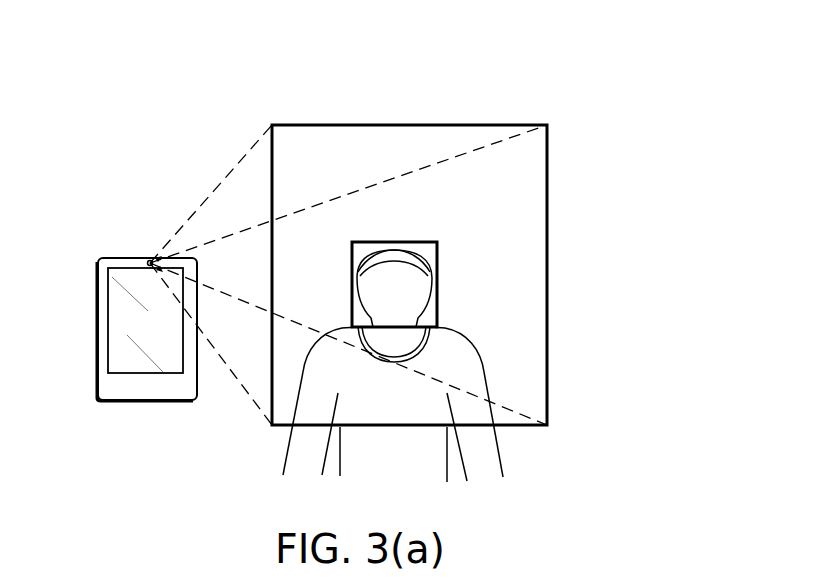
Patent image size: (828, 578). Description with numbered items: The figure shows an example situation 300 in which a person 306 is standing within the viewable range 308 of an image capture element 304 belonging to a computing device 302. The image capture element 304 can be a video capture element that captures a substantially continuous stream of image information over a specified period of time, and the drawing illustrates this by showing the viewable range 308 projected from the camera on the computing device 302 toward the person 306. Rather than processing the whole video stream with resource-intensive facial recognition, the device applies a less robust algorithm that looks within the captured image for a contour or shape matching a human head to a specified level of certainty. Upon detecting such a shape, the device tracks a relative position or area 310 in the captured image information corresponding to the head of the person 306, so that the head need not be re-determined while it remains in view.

The example situation 300 is at (715, 103).
The computing device 302 is at (96, 380).
The image capture element 304 is at (148, 261).
The person 306 is at (493, 443).
The viewable range 308 is at (549, 330).
The relative position or area 310 is at (438, 253).